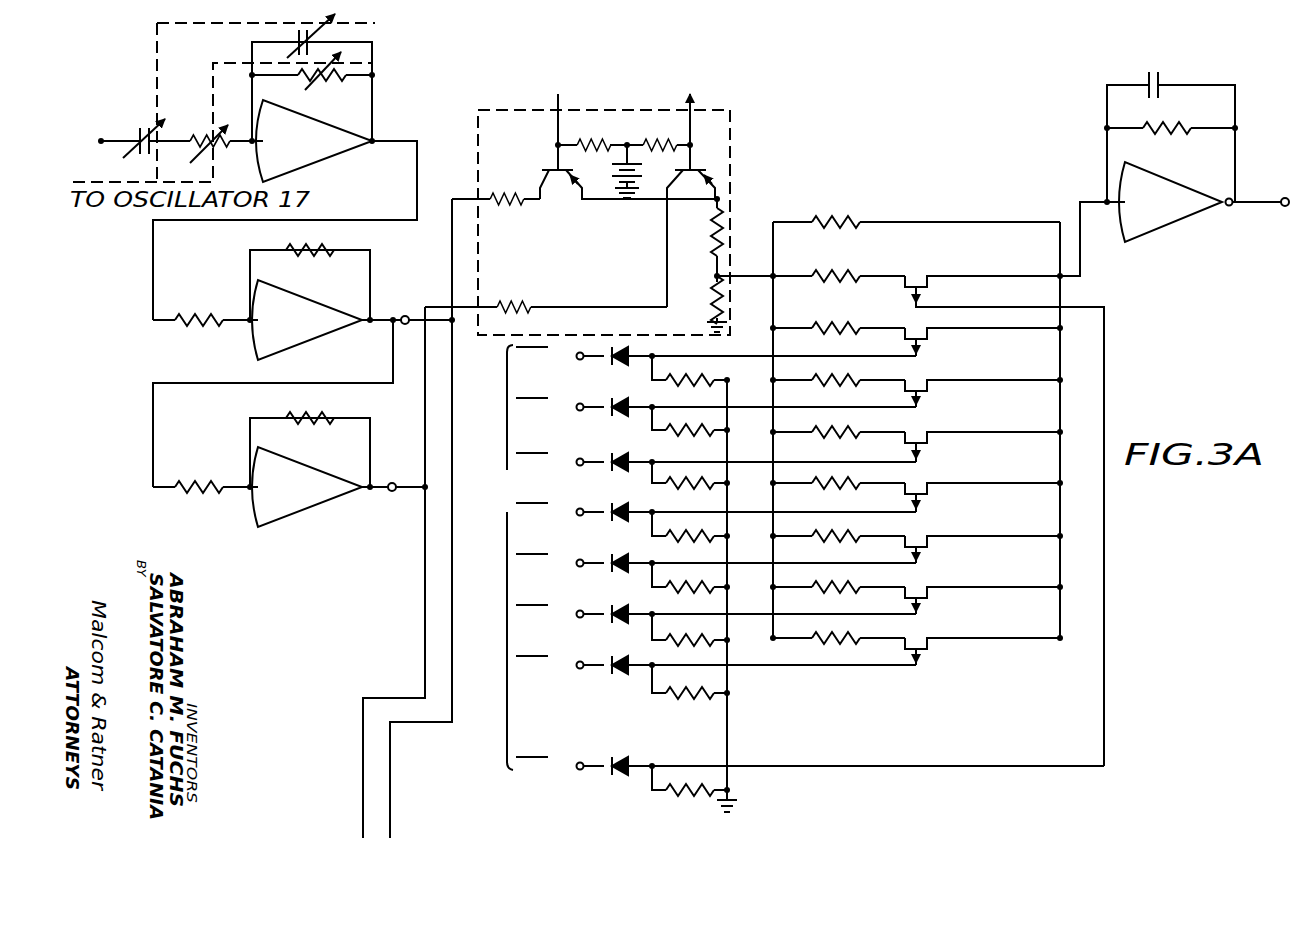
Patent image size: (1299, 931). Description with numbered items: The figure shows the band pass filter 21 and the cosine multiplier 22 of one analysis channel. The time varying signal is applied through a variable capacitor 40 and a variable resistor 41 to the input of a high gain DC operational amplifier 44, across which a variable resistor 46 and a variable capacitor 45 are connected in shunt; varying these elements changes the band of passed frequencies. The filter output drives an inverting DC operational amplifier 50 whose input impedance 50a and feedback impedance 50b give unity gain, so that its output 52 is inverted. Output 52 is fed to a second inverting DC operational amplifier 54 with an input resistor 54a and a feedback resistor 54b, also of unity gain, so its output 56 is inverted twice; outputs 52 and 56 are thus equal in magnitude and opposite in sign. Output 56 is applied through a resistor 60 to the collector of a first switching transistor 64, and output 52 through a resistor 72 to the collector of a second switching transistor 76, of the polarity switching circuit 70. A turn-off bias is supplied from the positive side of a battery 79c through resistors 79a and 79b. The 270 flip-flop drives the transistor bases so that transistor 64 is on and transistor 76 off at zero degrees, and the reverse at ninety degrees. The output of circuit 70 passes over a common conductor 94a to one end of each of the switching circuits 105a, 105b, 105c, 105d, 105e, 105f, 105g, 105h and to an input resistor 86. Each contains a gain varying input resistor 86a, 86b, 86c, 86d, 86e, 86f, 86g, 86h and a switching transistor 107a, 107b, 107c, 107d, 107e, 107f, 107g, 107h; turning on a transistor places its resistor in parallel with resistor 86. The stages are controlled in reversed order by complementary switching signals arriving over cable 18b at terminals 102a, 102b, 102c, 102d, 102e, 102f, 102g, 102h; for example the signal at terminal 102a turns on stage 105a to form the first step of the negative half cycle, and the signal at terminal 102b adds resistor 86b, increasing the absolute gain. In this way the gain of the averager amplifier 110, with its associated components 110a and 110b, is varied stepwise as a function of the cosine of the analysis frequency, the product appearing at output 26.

The band pass filter circuit 21 is at (304, 165).
The capacitor 40 is at (140, 132).
The resistor 41 is at (214, 146).
The high gain DC operational amplifier 44 is at (312, 164).
The capacitor 45 is at (299, 34).
The resistor 46 is at (313, 83).
The inverting DC operational amplifier 50 is at (317, 518).
The input impedance 50a is at (208, 328).
The feedback impedance 50b is at (279, 256).
The output of amplifier 50 52 is at (405, 316).
The additional inverting DC operational amplifier 54 is at (321, 572).
The input resistor 54a is at (172, 494).
The feedback resistor 54b is at (294, 424).
The output of amplifier 54 56 is at (392, 491).
The resistor 60 is at (513, 301).
The first switching transistor 64 is at (706, 170).
The polarity switching circuit 70 is at (730, 112).
The resistor 72 is at (489, 202).
The second switching transistor 76 is at (542, 170).
The resistor 79a is at (660, 138).
The resistor 79b is at (592, 138).
The battery 79c is at (612, 164).
The flip-flop 270 is at (700, 50).
The common conductor 94a is at (752, 306).
The cosine multiplier 22 is at (802, 499).
The input resistor 86 is at (852, 216).
The gain varying input resistor 86a is at (860, 649).
The gain varying input resistor 86b is at (860, 598).
The gain varying input resistor 86c is at (860, 546).
The gain varying input resistor 86d is at (862, 494).
The gain varying input resistor 86e is at (862, 442).
The gain varying input resistor 86f is at (810, 382).
The gain varying input resistor 86g is at (866, 322).
The gain varying input resistor 86h is at (866, 270).
The switching circuit 105a is at (984, 658).
The switching circuit 105b is at (984, 601).
The switching circuit 105c is at (984, 550).
The switching circuit 105d is at (984, 498).
The switching circuit 105e is at (984, 447).
The switching circuit 105f is at (984, 395).
The switching circuit 105g is at (984, 345).
The switching circuit 105h is at (1002, 484).
The field effect transistor 107a is at (926, 652).
The field effect transistor 107b is at (920, 598).
The field effect transistor 107c is at (920, 547).
The field effect transistor 107d is at (920, 494).
The field effect transistor 107e is at (920, 443).
The field effect transistor 107f is at (920, 391).
The field effect transistor 107g is at (920, 339).
The field effect transistor 107h is at (920, 287).
The terminal 102a is at (578, 663).
The terminal 102b is at (578, 612).
The terminal 102c is at (578, 561).
The terminal 102d is at (578, 510).
The terminal 102e is at (578, 460).
The terminal 102f is at (578, 407).
The terminal 102g is at (580, 352).
The terminal 102h is at (578, 764).
The cable 18b is at (499, 557).
The averager amplifier 110 is at (1196, 176).
The feedback resistor 110a is at (1174, 128).
The feedback capacitor 110b is at (1153, 72).
The output terminal 26 is at (1285, 206).